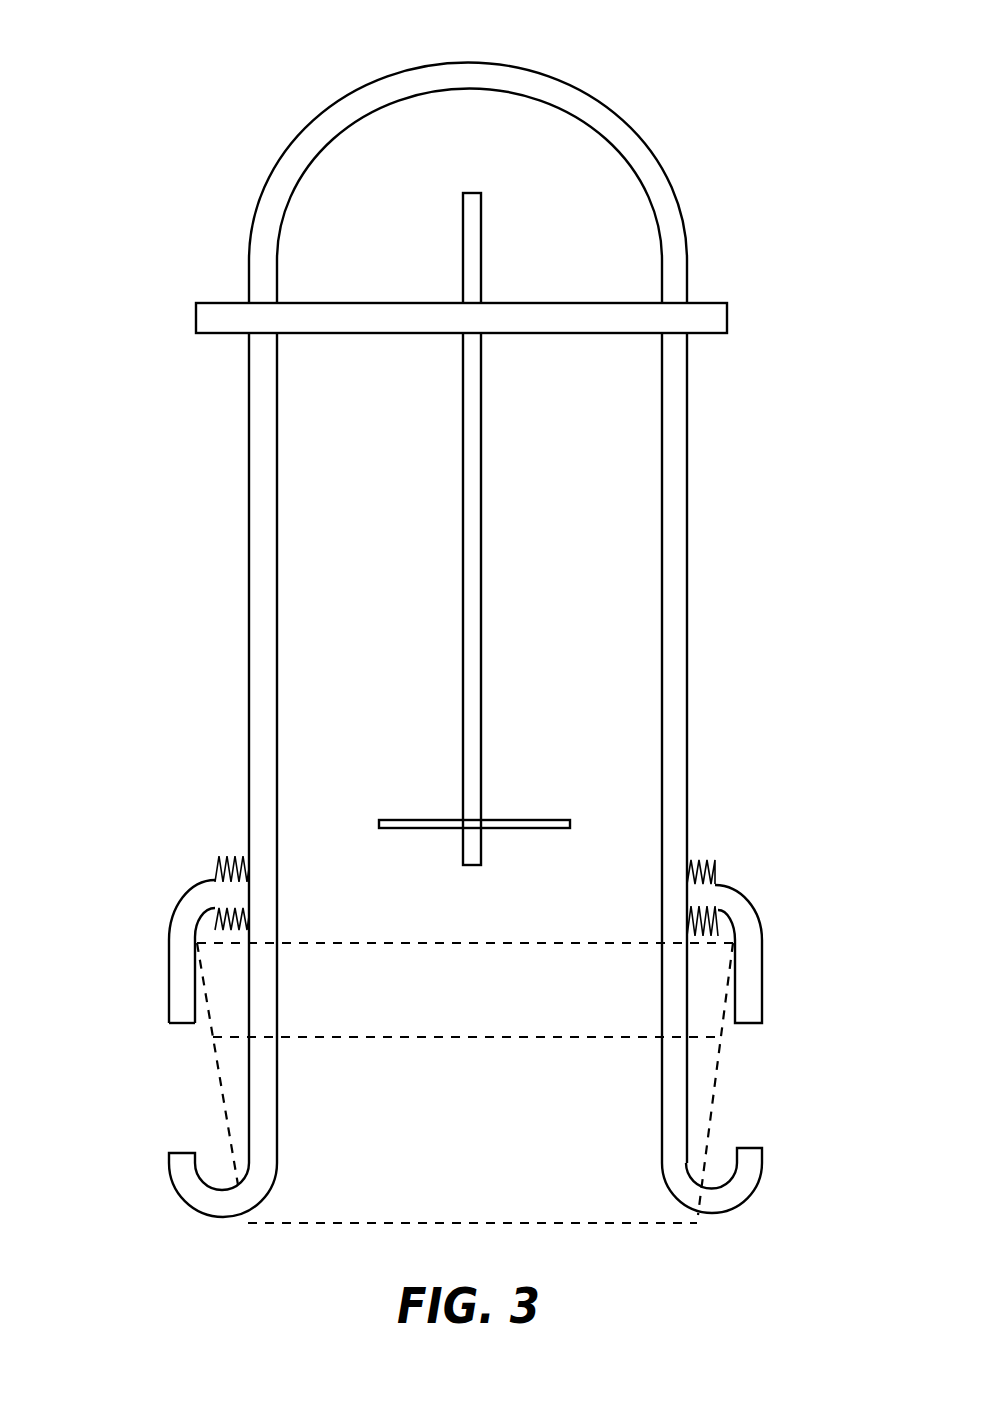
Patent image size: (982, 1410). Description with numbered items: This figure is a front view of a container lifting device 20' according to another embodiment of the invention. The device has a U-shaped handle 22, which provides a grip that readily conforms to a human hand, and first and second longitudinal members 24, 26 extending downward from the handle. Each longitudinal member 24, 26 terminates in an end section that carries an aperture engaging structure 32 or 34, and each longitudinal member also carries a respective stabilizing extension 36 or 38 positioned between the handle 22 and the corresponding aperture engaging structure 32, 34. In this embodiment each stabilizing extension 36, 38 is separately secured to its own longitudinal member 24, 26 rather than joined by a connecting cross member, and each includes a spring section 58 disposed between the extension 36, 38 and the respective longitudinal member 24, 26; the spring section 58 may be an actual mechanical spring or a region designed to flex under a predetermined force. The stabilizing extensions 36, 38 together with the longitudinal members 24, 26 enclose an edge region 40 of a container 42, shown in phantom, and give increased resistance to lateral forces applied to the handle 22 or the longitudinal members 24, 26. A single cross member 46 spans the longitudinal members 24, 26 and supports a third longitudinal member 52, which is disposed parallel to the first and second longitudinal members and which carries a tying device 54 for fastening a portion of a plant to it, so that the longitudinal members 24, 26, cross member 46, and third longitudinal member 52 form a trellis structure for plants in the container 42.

The container lifting device 20' is at (467, 583).
The U-shaped handle 22 is at (470, 63).
The first longitudinal member 24 is at (258, 613).
The second longitudinal member 26 is at (673, 623).
The aperture engaging structure 32 is at (183, 1153).
The aperture engaging structure 34 is at (752, 1150).
The stabilizing extension 36 is at (753, 985).
The stabilizing extension 38 is at (178, 993).
The edge region 40 is at (475, 968).
The container 42 is at (550, 1225).
The cross member 46 is at (720, 311).
The third longitudinal member 52 is at (475, 433).
The tying device 54 is at (527, 823).
The spring section 58 is at (213, 855).